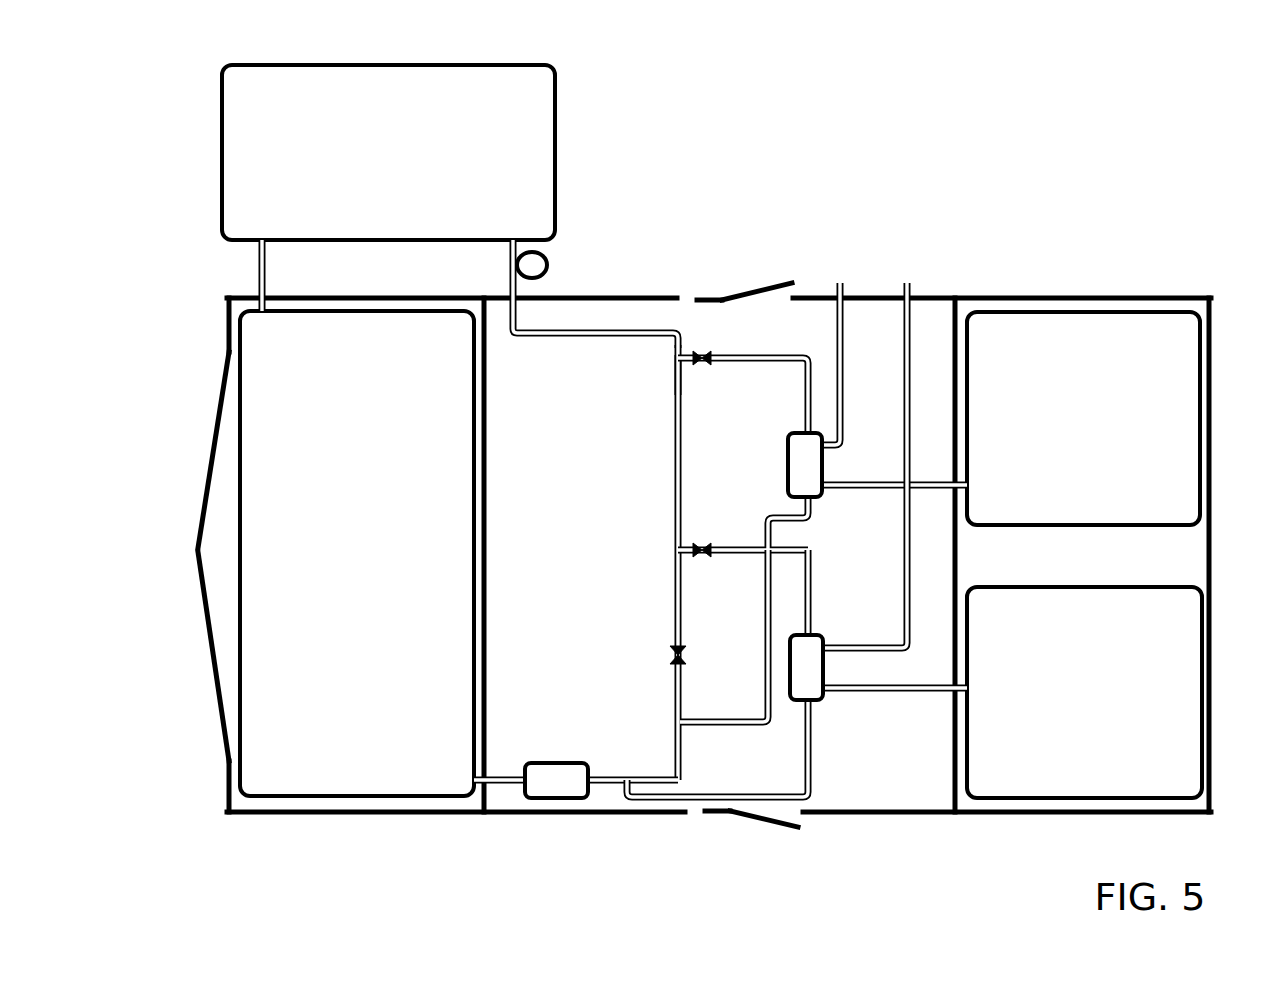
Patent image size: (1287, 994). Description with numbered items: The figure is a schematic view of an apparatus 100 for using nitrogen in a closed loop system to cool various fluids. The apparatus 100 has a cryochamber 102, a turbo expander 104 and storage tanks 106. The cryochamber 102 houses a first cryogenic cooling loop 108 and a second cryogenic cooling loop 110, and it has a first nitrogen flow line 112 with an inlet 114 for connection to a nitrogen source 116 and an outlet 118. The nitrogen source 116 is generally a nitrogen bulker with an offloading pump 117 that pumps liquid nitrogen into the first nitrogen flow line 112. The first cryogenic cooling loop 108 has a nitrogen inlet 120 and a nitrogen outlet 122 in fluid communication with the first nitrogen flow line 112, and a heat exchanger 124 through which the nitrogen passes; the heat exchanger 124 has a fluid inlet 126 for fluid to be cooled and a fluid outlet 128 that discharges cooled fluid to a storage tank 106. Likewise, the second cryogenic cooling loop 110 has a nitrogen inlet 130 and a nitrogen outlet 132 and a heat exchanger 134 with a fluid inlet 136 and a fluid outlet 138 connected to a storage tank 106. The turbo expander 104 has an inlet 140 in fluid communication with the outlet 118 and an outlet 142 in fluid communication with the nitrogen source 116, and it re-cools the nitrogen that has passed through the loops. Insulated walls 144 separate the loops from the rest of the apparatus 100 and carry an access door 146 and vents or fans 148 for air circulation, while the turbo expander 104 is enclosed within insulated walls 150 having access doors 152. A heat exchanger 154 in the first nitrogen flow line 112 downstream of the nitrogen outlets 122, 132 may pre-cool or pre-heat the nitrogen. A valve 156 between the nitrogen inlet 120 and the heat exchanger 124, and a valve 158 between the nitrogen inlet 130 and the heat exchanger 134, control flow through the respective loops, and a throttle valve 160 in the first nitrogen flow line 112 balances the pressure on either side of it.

The apparatus 100 is at (1036, 77).
The cryochamber 102 is at (940, 294).
The turbo expander 104 is at (318, 798).
The storage tanks 106 is at (1150, 312).
The first cryogenic cooling loop 108 is at (792, 356).
The second cryogenic cooling loop 110 is at (812, 770).
The first nitrogen flow line 112 is at (675, 372).
The inlet 114 is at (518, 243).
The nitrogen source 116 is at (222, 122).
The offloading pump 117 is at (548, 262).
The outlet 118 is at (500, 785).
The nitrogen inlet 120 is at (686, 378).
The nitrogen outlet 122 is at (700, 722).
The heat exchanger 124 is at (825, 465).
The fluid inlet 126 is at (840, 284).
The fluid outlet 128 is at (960, 517).
The nitrogen inlet 130 is at (690, 553).
The nitrogen outlet 132 is at (627, 792).
The heat exchanger 134 is at (825, 670).
The fluid inlet 136 is at (907, 284).
The fluid outlet 138 is at (913, 692).
The inlet 140 is at (480, 792).
The outlet 142 is at (260, 278).
The insulated walls 144 is at (865, 815).
The access door 146 is at (781, 284).
The vents or fans 148 is at (687, 297).
The insulated walls 150 is at (355, 810).
The access doors 152 is at (203, 627).
The heat exchanger 154 is at (557, 800).
The valve 156 is at (702, 352).
The valve 158 is at (706, 545).
The throttle valve 160 is at (670, 655).